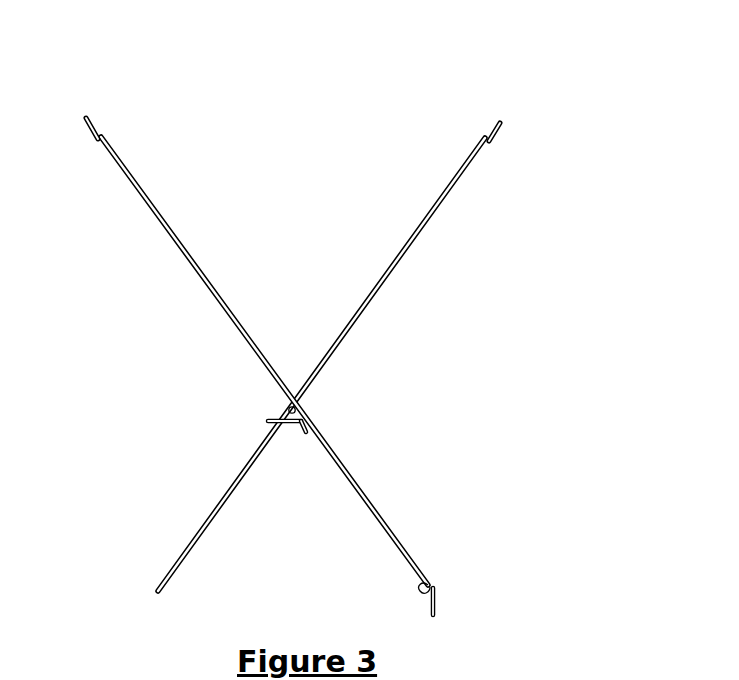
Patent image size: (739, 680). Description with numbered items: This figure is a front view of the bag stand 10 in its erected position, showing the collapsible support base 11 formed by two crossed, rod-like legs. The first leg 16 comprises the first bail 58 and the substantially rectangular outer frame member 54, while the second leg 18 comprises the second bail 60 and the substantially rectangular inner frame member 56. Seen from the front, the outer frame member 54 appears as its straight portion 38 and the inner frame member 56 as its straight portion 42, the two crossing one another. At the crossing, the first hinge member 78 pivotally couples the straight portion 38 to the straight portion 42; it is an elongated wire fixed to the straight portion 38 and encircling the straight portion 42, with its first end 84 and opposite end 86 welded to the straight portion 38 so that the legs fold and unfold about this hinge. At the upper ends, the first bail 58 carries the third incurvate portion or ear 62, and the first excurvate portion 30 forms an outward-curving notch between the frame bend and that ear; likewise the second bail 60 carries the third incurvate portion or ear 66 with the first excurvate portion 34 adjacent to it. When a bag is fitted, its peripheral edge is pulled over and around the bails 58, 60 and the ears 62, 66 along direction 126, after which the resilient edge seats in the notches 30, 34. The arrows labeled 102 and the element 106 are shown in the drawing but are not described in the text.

The bag stand 10 is at (642, 102).
The support base 11 is at (129, 450).
The first leg 16 is at (278, 358).
The second leg 18 is at (360, 313).
The first excurvate portion 30 is at (97, 187).
The first excurvate portion 34 is at (527, 177).
The straight portion 38 is at (158, 212).
The straight portion 42 is at (426, 216).
The outer frame member 54 is at (241, 244).
The inner frame member 56 is at (322, 278).
The first bail 58 is at (62, 158).
The second bail 60 is at (453, 111).
The third incurvate portion 62 is at (86, 122).
The third incurvate portion 66 is at (500, 124).
The first hinge member 78 is at (288, 428).
The first end 84 is at (300, 432).
The opposite end 86 is at (296, 409).
The direction of movement 102 is at (337, 365).
The hanging hook 106 is at (438, 602).
The direction 126 is at (76, 59).